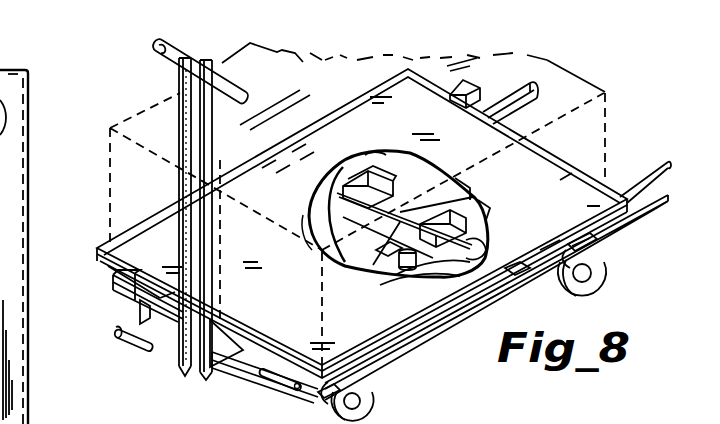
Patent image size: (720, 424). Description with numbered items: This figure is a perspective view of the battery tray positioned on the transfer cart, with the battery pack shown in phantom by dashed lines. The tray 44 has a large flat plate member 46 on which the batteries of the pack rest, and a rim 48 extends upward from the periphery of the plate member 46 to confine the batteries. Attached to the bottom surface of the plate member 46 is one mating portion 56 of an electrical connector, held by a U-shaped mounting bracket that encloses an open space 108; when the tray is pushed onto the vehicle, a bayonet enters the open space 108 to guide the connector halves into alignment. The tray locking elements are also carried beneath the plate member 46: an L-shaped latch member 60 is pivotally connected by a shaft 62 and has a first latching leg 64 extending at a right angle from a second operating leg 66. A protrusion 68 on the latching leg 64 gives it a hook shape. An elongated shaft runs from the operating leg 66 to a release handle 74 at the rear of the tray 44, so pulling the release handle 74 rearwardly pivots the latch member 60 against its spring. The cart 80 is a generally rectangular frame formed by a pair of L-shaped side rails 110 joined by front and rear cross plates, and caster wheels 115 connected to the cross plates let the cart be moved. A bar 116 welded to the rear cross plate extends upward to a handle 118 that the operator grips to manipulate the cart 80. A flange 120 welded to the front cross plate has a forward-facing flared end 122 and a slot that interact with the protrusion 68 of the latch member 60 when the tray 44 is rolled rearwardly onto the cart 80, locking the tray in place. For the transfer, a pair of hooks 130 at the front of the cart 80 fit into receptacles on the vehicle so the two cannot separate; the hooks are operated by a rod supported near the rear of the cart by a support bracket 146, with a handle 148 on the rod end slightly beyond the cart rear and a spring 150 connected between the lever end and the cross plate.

The tray 44 is at (578, 162).
The plate member 46 is at (8, 130).
The rim 48 is at (290, 137).
The mating portion of electrical connector 56 is at (320, 174).
The latch member 60 is at (494, 230).
The shaft 62 is at (399, 268).
The first latching leg 64 is at (485, 258).
The second operating leg 66 is at (395, 290).
The protrusion 68 is at (376, 263).
The release handle 74 is at (262, 378).
The cart 80 is at (160, 385).
The open space 108 is at (368, 155).
The side rails 110 is at (122, 296).
The caster wheels 115 is at (598, 280).
The bar 116 is at (200, 205).
The handle 118 is at (160, 46).
The flange 120 is at (468, 170).
The flared end 122 is at (482, 210).
The hooks 130 is at (540, 82).
The support bracket 146 is at (142, 323).
The handle 148 is at (125, 340).
The spring 150 is at (513, 281).